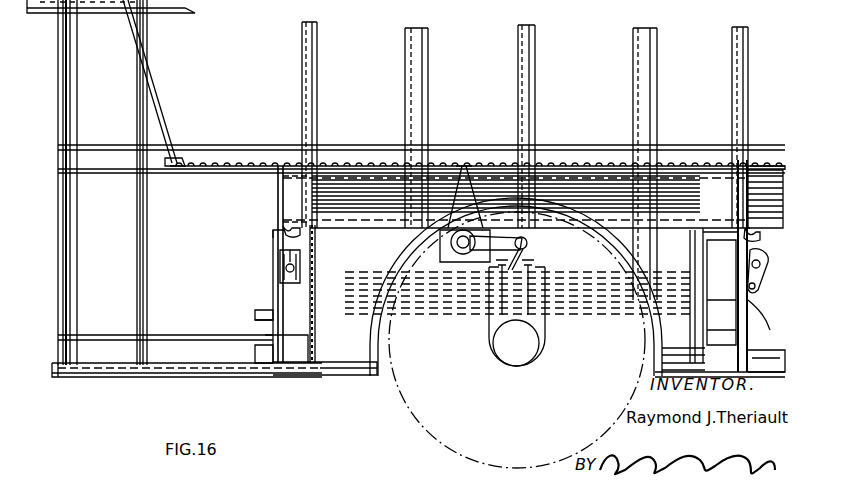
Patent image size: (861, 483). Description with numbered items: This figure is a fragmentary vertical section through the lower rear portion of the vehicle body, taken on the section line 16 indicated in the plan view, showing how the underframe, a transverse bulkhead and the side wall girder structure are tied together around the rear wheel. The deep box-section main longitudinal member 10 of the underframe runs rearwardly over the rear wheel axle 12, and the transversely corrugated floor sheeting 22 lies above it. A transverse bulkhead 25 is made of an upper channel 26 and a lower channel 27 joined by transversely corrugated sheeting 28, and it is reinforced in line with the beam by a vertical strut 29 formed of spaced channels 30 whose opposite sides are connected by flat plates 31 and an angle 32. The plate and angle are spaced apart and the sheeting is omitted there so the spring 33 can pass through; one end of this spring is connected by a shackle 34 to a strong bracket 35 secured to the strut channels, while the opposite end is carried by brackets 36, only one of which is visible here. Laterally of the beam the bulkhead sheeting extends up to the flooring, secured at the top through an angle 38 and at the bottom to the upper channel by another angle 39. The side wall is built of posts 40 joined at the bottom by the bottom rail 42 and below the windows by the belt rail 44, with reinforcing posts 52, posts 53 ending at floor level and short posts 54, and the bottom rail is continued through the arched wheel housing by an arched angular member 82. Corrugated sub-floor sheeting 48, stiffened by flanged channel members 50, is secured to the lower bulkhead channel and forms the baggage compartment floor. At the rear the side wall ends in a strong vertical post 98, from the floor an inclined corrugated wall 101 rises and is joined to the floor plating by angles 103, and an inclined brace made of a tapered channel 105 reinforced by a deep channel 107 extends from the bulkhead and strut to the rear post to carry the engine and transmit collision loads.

The main longitudinal members 10 is at (376, 230).
The rear wheel axle 12 is at (520, 362).
The figure 16 is at (778, 12).
The floor sheeting 22 is at (225, 168).
The transverse bulkheads 25 is at (318, 311).
The upper channel 26 is at (305, 232).
The lower channel 27 is at (316, 338).
The transversely corrugated sheeting 28 is at (316, 296).
The vertical struts 29 is at (274, 258).
The spaced channels 30 is at (276, 241).
The flat plates 31 is at (707, 334).
The angle 32 is at (700, 258).
The spring 33 is at (584, 304).
The shackle 34 is at (768, 296).
The bracket 35 is at (754, 306).
The brackets 36 is at (284, 282).
The angle 38 is at (324, 166).
The angle 39 is at (764, 164).
The posts 40 is at (415, 28).
The bottom rail 42 is at (320, 366).
The belt rail 44 is at (27, 10).
The sub-floor sheeting 48 is at (751, 186).
The flanged channel members 50 is at (766, 282).
The vertical posts 52 is at (312, 24).
The posts 53 is at (736, 28).
The posts 54 is at (523, 26).
The arched angular members 82 is at (372, 360).
The vertical post 98 is at (77, 122).
The inclined transverse wall 101 is at (156, 94).
The angles 103 is at (180, 162).
The tapered channel 105 is at (208, 376).
The channel 107 is at (163, 352).